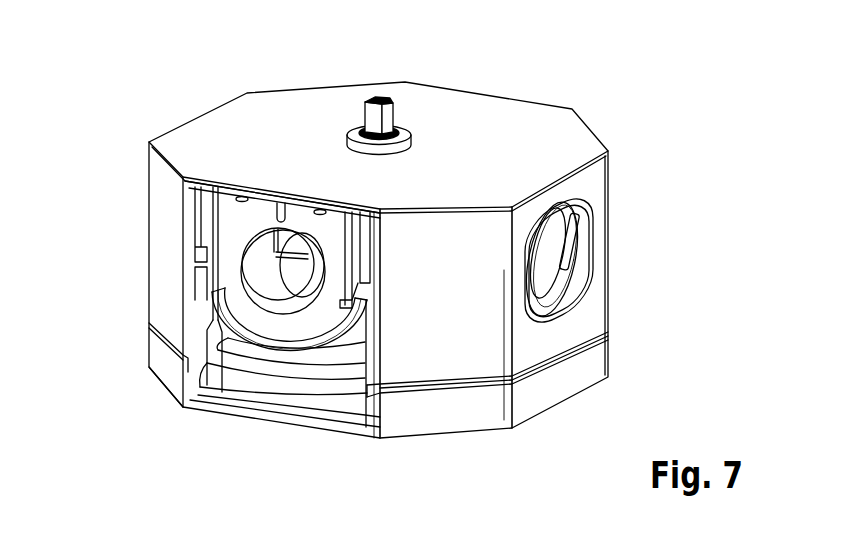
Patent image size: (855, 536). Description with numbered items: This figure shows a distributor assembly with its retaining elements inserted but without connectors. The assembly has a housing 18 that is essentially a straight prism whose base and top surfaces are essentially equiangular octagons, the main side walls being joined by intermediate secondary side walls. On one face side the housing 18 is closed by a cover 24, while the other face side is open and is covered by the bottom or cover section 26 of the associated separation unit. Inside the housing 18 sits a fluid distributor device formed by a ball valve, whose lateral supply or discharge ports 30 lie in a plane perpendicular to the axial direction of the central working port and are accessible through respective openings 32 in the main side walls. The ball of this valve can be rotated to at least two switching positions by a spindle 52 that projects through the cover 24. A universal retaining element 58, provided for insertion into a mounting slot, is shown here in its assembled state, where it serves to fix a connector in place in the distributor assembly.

The housing 18 is at (627, 216).
The cover 24 is at (530, 125).
The bottom or cover section 26 is at (437, 420).
The supply or discharge port 30 is at (222, 309).
The opening 32 is at (573, 320).
The spindle 52 is at (388, 100).
The retaining element 58 is at (232, 237).